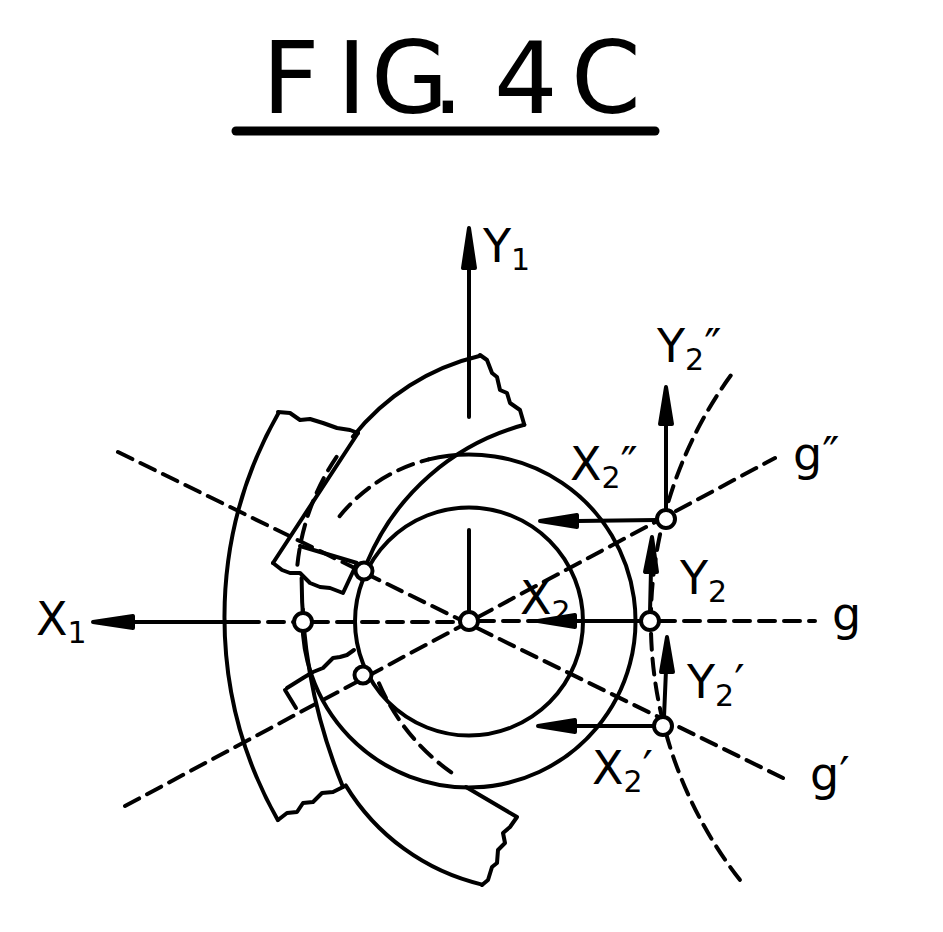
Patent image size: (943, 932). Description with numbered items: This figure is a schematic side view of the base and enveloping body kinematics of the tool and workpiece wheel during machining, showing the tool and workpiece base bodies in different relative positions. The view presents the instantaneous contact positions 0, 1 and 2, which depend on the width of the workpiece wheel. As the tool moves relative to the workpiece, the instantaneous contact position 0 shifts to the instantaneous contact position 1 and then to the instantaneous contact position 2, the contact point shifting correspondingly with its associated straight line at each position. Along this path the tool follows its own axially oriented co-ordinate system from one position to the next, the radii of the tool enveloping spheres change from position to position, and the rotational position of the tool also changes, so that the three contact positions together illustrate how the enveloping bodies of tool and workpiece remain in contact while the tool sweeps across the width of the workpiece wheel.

The instantaneous contact position 0 is at (291, 616).
The instantaneous contact position 1 is at (445, 437).
The instantaneous contact position 2 is at (401, 767).